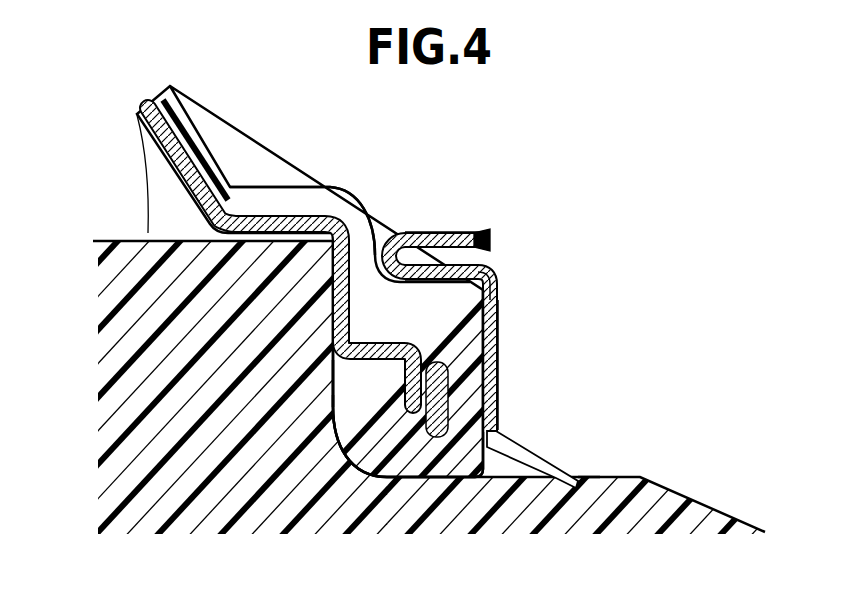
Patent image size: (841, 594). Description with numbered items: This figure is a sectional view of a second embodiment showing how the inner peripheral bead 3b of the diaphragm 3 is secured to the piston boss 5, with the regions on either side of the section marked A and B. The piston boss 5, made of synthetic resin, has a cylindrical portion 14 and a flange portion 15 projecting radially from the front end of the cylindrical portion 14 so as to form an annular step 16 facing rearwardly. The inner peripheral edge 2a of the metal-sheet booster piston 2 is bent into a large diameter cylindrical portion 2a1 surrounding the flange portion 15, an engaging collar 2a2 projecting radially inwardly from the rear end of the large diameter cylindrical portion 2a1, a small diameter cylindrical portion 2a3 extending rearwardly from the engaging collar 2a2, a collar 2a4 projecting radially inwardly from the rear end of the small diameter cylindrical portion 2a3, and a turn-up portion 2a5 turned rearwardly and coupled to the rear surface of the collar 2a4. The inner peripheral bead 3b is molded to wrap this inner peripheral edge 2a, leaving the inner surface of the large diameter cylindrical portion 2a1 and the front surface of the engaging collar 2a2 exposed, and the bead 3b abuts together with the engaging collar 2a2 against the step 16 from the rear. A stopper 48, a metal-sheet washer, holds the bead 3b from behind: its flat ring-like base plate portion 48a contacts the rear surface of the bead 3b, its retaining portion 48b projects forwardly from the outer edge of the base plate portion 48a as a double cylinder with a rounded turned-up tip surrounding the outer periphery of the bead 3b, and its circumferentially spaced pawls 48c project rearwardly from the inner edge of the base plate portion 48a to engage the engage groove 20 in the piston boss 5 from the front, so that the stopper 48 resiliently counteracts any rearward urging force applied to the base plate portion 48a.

The booster piston 2 is at (163, 147).
The inner peripheral edge 2a is at (356, 359).
The large diameter cylindrical portion 2a1 is at (295, 220).
The engaging collar 2a2 is at (343, 291).
The small diameter cylindrical portion 2a3 is at (340, 370).
The collar 2a4 is at (400, 398).
The turn-up portion 2a5 is at (447, 417).
The diaphragm 3 is at (185, 140).
The inner peripheral bead 3b is at (494, 281).
The piston boss 5 is at (196, 455).
The cylindrical portion 14 is at (690, 508).
The flange portion 15 is at (252, 257).
The annular step 16 is at (325, 425).
The engage groove 20 is at (579, 481).
The stopper 48 is at (494, 337).
The base plate portion 48a is at (498, 360).
The retaining portion 48b is at (433, 228).
The pawls 48c is at (548, 467).
The region A (outer side) A is at (103, 228).
The region B (inner side) B is at (300, 134).